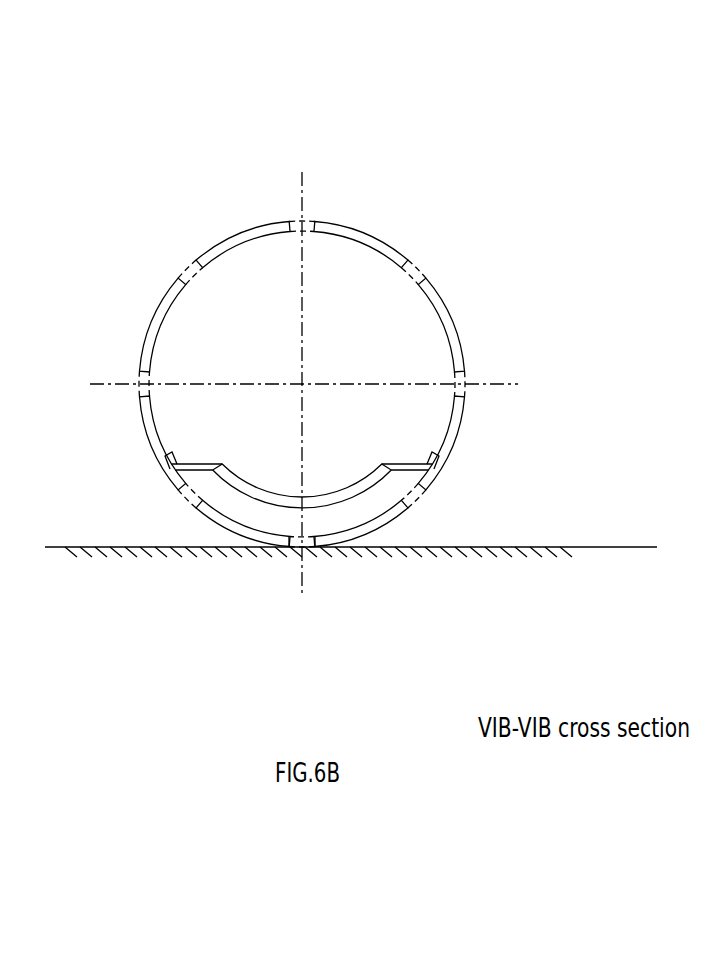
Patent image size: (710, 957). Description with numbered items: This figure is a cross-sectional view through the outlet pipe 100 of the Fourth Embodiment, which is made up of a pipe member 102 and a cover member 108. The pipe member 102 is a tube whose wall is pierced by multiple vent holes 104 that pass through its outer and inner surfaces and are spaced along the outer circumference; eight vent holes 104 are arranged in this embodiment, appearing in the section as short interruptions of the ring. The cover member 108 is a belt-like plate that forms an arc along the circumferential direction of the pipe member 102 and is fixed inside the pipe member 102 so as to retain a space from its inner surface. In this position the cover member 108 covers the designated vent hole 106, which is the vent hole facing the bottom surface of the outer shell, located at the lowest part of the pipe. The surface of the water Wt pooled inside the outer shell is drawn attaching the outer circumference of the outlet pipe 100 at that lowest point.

The outlet pipe 100 is at (299, 133).
The pipe member 102 is at (227, 240).
The vent holes 104 is at (125, 377).
The designated vent hole 106 is at (285, 563).
The cover member 108 is at (173, 450).
The water Wt is at (543, 550).